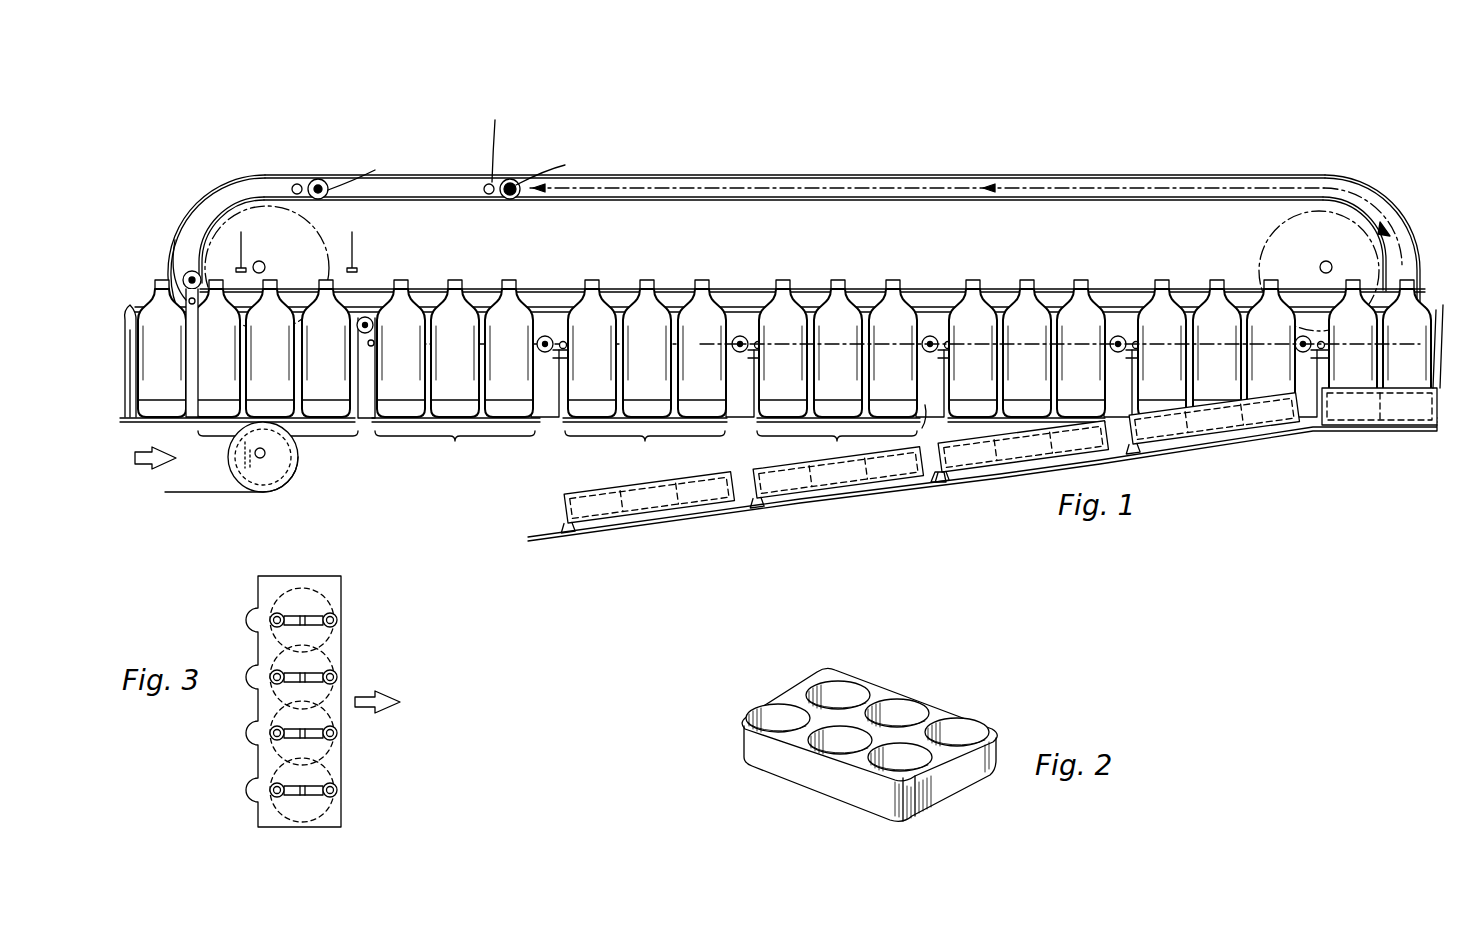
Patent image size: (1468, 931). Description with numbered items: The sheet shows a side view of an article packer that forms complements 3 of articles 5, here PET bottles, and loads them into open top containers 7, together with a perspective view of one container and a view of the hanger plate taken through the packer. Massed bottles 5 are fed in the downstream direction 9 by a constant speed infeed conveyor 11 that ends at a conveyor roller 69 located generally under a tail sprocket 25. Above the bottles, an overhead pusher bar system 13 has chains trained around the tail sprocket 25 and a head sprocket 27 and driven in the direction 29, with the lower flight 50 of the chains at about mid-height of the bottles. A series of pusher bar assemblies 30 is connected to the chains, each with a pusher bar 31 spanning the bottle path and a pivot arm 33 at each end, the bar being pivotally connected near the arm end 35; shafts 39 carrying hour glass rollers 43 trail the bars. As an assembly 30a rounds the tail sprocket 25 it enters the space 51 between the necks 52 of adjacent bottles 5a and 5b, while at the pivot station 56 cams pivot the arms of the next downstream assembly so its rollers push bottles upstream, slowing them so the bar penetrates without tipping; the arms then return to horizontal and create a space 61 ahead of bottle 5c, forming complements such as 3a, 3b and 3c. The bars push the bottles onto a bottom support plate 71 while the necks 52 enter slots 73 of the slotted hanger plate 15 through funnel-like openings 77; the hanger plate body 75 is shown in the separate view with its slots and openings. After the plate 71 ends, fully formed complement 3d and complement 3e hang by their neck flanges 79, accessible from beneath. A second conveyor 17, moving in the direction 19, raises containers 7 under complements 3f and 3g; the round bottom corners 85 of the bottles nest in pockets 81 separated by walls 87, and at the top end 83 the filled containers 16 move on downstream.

In FIG. 1, the complement 3 is at (301, 251).
In FIG. 1, the complement 3a is at (182, 316).
In FIG. 1, the complement 3b is at (300, 460).
In FIG. 1, the complement 3c is at (455, 443).
In FIG. 1, the complement 3d is at (645, 443).
In FIG. 1, the complement 3e is at (837, 443).
In FIG. 1, the complement 3f is at (1022, 465).
In FIG. 1, the complement 3g is at (1220, 450).
In FIG. 1, the article 5 is at (156, 292).
In FIG. 3, the article 5 is at (258, 625).
In FIG. 1, the bottle 5a is at (162, 348).
In FIG. 1, the bottle 5b is at (216, 348).
In FIG. 1, the bottle 5c is at (270, 348).
In FIG. 1, the open top container 7 is at (580, 486).
In FIG. 2, the open top container 7 is at (946, 678).
In FIG. 1, the downstream direction arrow 9 is at (155, 470).
In FIG. 3, the downstream direction arrow 9 is at (384, 690).
In FIG. 1, the infeed conveyor 11 is at (232, 492).
In FIG. 1, the overhead pusher bar system 13 is at (783, 175).
In FIG. 1, the slotted hanger plate 15 is at (936, 288).
In FIG. 1, the filled container 16 is at (1392, 385).
In FIG. 1, the second conveyor 17 is at (1176, 448).
In FIG. 1, the container direction arrow 19 is at (545, 510).
In FIG. 1, the tail sprocket 25 is at (322, 225).
In FIG. 1, the head sprocket 27 is at (1266, 232).
In FIG. 1, the chain direction arrow 29 is at (666, 186).
In FIG. 1, the pusher bar assembly 30 is at (470, 190).
In FIG. 1, the pusher bar assembly 30a is at (218, 238).
In FIG. 1, the pusher bar 31 is at (297, 183).
In FIG. 1, the pivot arm 33 is at (320, 178).
In FIG. 1, the pivot arm end 35 is at (494, 141).
In FIG. 1, the shaft 39 is at (553, 167).
In FIG. 1, the hour glass roller 43 is at (360, 170).
In FIG. 1, the lower flight 50 is at (1042, 344).
In FIG. 1, the space 51 is at (176, 245).
In FIG. 1, the bottle neck 52 is at (160, 290).
In FIG. 1, the pivot station 56 is at (370, 312).
In FIG. 1, the space 61 is at (556, 384).
In FIG. 1, the conveyor roller 69 is at (228, 464).
In FIG. 1, the bottom support plate 71 is at (552, 430).
In FIG. 3, the slot 73 is at (340, 610).
In FIG. 3, the carrier plate 75 is at (312, 576).
In FIG. 3, the funnel-like opening 77 is at (258, 610).
In FIG. 1, the neck flange 79 is at (508, 290).
In FIG. 2, the pocket 81 is at (842, 685).
In FIG. 1, the conveyor portion 83 is at (1392, 430).
In FIG. 1, the round bottom corner 85 is at (932, 443).
In FIG. 2, the wall 87 is at (875, 690).